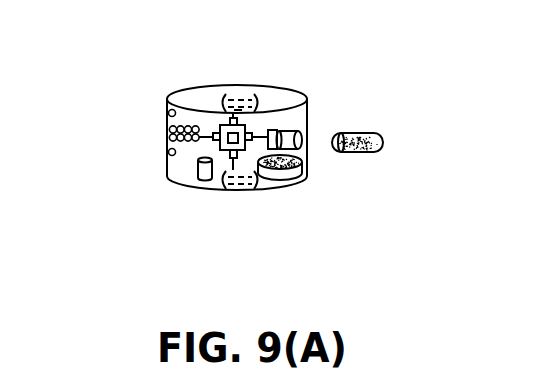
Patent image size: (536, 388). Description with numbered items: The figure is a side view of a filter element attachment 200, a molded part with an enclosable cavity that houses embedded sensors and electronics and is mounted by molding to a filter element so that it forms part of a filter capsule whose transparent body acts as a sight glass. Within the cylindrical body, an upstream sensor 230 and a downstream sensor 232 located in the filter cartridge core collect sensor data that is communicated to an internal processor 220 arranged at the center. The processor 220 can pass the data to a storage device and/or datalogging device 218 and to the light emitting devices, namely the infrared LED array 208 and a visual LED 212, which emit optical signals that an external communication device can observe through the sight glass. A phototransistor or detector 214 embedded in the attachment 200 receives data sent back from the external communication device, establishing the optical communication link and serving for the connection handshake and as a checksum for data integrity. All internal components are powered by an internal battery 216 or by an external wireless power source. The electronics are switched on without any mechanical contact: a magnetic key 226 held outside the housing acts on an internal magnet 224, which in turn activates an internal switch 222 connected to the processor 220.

The filter element attachment 200 is at (313, 165).
The LED array 208 is at (150, 130).
The visual LED 212 is at (162, 104).
The phototransistor or detector 214 is at (150, 155).
The internal battery 216 is at (299, 183).
The storage device and/or datalogging device 218 is at (205, 181).
The processor 220 is at (239, 151).
The internal switch 222 is at (274, 129).
The internal magnet 224 is at (300, 136).
The magnetic key 226 is at (385, 134).
The upstream sensor 230 is at (245, 93).
The downstream sensor 232 is at (236, 196).